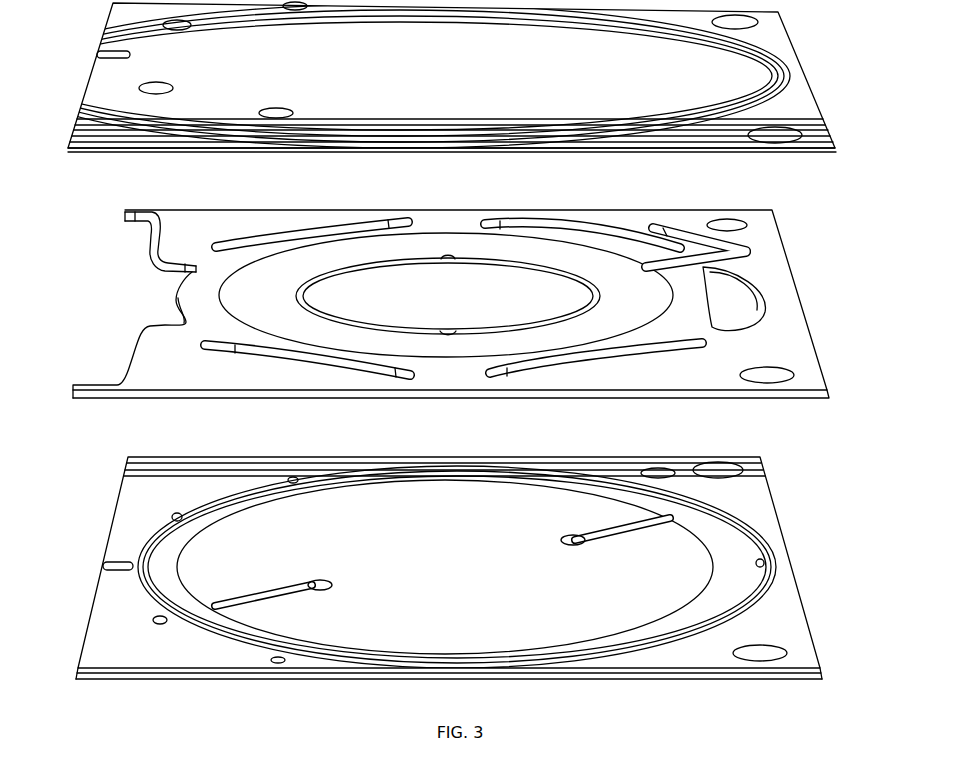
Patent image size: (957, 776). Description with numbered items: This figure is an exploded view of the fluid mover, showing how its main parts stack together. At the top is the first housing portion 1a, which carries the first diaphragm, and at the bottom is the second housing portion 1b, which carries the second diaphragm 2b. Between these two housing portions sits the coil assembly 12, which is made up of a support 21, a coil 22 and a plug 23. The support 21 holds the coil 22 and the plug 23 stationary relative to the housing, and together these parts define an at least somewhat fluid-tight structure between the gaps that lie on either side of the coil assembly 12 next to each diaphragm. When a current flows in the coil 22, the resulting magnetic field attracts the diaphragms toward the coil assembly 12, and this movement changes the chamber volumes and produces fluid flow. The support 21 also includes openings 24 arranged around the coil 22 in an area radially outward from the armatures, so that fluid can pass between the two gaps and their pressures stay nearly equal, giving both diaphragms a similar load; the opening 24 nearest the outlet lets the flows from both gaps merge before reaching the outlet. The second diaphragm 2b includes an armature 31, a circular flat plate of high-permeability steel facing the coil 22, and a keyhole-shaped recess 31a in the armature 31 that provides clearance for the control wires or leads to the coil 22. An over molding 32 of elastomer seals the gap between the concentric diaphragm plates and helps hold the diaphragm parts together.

The first housing portion 1a is at (812, 100).
The second housing portion 1b is at (783, 608).
The second diaphragm 2b is at (459, 543).
The coil assembly 12 is at (172, 228).
The support 21 is at (793, 328).
The coil 22 is at (653, 283).
The plug 23 is at (428, 276).
The openings 24 is at (280, 232).
The armature 31 is at (213, 548).
The keyhole-shaped recess 31a is at (252, 597).
The over molding 32 is at (160, 593).